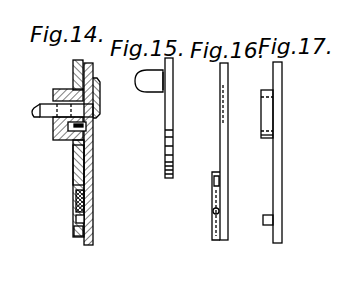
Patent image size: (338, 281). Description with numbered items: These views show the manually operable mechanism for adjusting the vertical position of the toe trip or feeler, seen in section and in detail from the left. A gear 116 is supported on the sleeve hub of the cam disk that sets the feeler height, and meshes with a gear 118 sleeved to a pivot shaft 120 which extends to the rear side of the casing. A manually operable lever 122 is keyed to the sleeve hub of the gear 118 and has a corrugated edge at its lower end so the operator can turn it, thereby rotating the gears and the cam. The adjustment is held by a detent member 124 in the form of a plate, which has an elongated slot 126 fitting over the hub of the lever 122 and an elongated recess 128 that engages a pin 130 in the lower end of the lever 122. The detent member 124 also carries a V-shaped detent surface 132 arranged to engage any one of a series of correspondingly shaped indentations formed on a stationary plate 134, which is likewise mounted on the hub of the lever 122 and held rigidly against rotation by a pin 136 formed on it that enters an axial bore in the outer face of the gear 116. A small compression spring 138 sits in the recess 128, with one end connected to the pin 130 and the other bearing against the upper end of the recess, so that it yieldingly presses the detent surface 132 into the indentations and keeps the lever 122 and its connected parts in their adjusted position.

In FIG. 17, the gear 116 is at (330, 89).
In FIG. 14, the gear 118 is at (66, 137).
In FIG. 14, the pivot shaft 120 is at (57, 118).
In FIG. 14, the manually operable lever 122 is at (92, 237).
In FIG. 17, the manually operable lever 122 is at (282, 184).
In FIG. 14, the detent member 124 is at (93, 170).
In FIG. 16, the detent member 124 is at (228, 75).
In FIG. 14, the elongated slot 126 is at (78, 82).
In FIG. 16, the elongated slot 126 is at (221, 105).
In FIG. 14, the elongated recess 128 is at (75, 232).
In FIG. 16, the elongated recess 128 is at (213, 210).
In FIG. 14, the pin 130 is at (85, 218).
In FIG. 17, the pin 130 is at (265, 226).
In FIG. 14, the V-shaped detent surface 132 is at (74, 170).
In FIG. 16, the V-shaped detent surface 132 is at (214, 180).
In FIG. 14, the plate 134 is at (72, 158).
In FIG. 15, the plate 134 is at (165, 116).
In FIG. 17, the plate 134 is at (327, 121).
In FIG. 15, the pin 136 is at (143, 82).
In FIG. 14, the compression spring 138 is at (85, 198).
In FIG. 17, the compression spring 138 is at (327, 105).